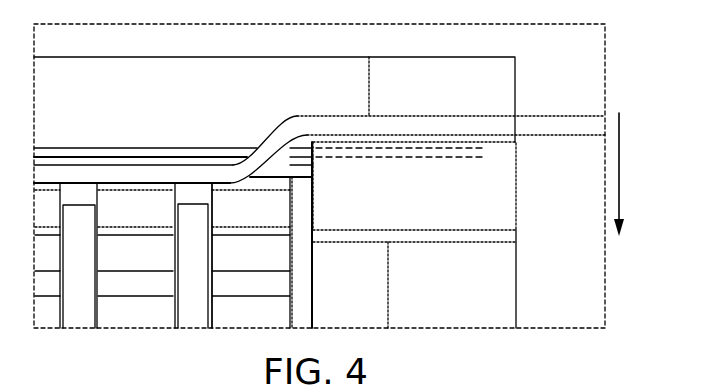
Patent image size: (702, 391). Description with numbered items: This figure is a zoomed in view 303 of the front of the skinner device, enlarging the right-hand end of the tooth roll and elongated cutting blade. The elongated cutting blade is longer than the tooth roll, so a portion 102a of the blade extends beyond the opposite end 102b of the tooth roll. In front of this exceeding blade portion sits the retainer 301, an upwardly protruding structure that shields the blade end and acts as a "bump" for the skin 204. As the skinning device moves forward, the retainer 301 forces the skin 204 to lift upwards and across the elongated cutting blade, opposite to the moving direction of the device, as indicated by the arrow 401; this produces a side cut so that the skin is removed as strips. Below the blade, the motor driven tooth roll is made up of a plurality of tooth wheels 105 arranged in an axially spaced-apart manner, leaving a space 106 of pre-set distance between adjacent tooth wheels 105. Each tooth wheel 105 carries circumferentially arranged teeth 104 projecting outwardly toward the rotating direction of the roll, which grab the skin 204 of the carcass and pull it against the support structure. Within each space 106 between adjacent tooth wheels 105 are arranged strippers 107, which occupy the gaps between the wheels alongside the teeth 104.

The zoomed in view 303 is at (562, 14).
The portion of the elongated cutting blade exceeding the tooth roll 102a is at (187, 155).
The skin 204 is at (349, 118).
The opposite end of the tooth roll exceeded by the cutting blade 102b is at (452, 148).
The retainer 301 is at (424, 199).
The arrow 401 is at (619, 152).
The tooth wheels 105 is at (143, 339).
The teeth 104 is at (150, 261).
The space between adjacent tooth wheels 106 is at (75, 332).
The strippers 107 is at (92, 275).